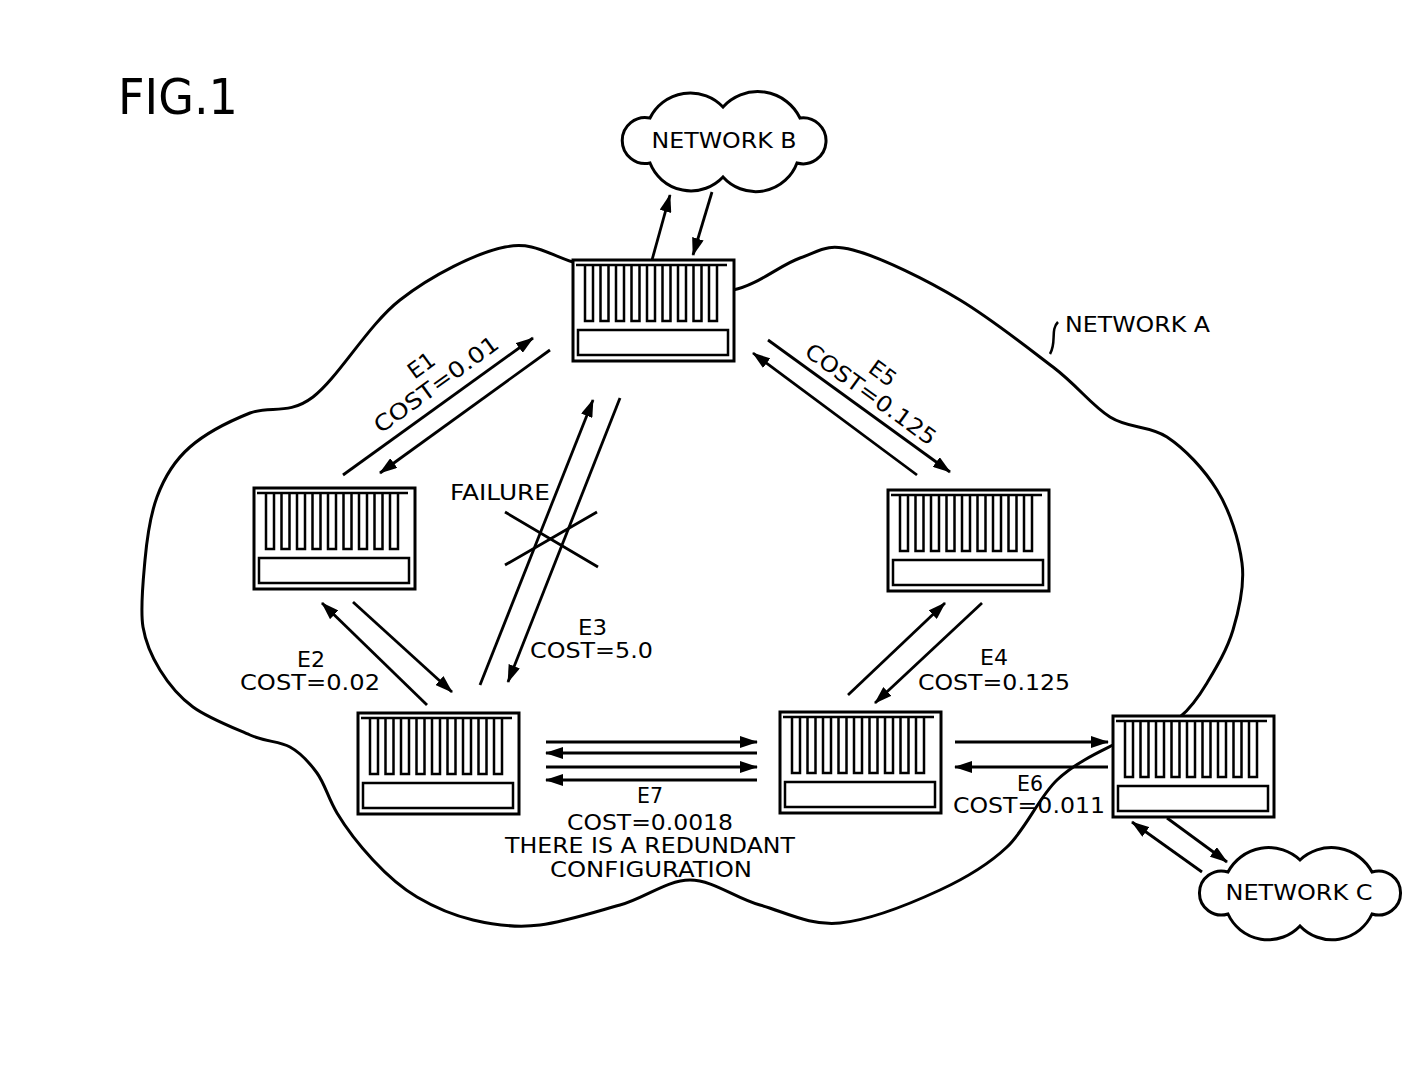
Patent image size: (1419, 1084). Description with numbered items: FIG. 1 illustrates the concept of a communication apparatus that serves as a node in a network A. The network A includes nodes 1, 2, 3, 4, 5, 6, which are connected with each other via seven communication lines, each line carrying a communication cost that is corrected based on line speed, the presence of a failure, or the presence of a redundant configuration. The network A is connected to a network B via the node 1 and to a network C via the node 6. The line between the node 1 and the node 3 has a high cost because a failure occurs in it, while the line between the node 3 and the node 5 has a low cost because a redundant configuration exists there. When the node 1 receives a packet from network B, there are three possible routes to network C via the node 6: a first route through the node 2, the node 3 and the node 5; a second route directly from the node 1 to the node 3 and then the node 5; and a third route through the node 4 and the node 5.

The node 1 is at (734, 302).
The node 2 is at (254, 534).
The node 3 is at (358, 775).
The node 4 is at (1017, 490).
The node 5 is at (883, 813).
The node 6 is at (1257, 716).